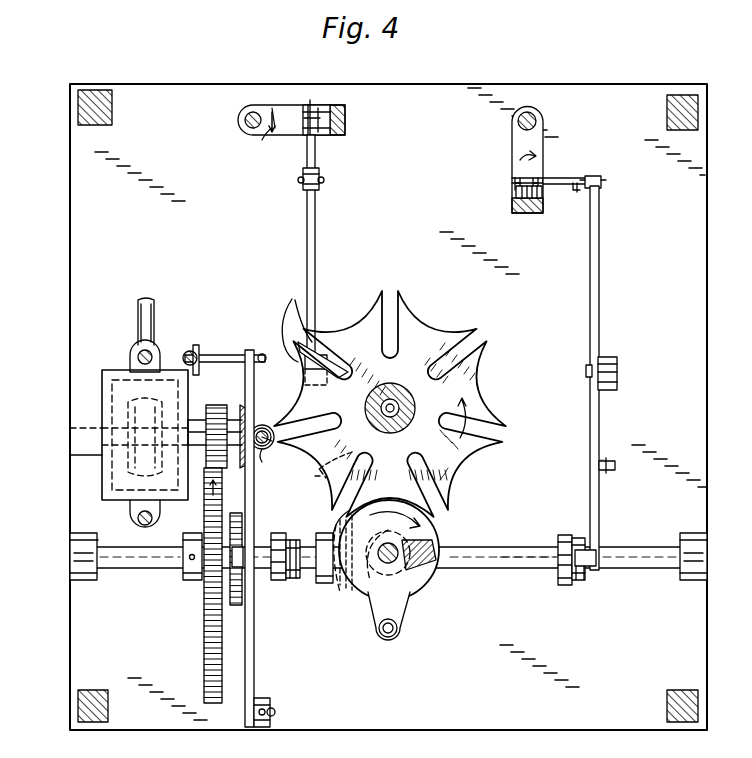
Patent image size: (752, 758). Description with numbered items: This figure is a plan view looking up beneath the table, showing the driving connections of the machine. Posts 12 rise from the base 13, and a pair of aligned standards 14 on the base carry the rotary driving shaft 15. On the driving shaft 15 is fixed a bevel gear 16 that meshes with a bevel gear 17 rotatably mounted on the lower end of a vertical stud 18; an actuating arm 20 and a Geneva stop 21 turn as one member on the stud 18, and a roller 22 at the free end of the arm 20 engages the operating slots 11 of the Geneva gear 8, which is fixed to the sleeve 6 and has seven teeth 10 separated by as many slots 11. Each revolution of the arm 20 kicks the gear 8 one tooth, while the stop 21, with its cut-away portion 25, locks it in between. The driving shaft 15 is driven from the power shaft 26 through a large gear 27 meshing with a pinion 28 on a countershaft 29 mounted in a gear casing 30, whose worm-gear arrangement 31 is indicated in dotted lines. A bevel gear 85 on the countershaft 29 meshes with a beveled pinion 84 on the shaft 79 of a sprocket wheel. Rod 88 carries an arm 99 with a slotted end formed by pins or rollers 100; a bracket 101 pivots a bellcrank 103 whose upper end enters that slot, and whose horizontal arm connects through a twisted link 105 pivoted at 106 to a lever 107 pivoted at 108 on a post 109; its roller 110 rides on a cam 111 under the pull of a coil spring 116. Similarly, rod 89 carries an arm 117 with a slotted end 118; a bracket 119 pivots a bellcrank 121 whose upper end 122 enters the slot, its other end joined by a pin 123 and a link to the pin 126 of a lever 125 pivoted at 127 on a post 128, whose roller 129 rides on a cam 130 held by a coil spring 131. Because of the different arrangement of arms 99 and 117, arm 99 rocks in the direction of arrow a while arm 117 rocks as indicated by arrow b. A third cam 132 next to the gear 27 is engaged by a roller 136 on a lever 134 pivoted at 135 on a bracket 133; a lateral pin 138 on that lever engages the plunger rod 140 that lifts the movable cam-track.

The sleeve 6 is at (396, 392).
The Geneva gear 8 is at (390, 404).
The teeth 10 is at (448, 460).
The operating slots 11 is at (482, 432).
The posts 12 is at (108, 122).
The base 13 is at (641, 443).
The standards 14 is at (70, 546).
The driving shaft 15 is at (528, 547).
The bevel gear 16 is at (337, 592).
The bevel gear 17 is at (440, 582).
The vertical stud 18 is at (398, 502).
The actuating arm 20 is at (398, 614).
The Geneva stop 21 is at (440, 538).
The roller 22 is at (388, 636).
The cam track 25 is at (415, 600).
The power shaft 26 is at (138, 312).
The large gear 27 is at (204, 645).
The pinion 28 is at (214, 403).
The countershaft 29 is at (198, 430).
The gear casing 30 is at (70, 455).
The worm-gear arrangement 31 is at (112, 388).
The shaft 79 is at (265, 426).
The beveled pinion 84 is at (264, 452).
The bevel gear 85 is at (247, 466).
The rod 88 is at (536, 120).
The rod 89 is at (245, 120).
The arm 99 is at (518, 148).
The pins or rollers 100 is at (516, 194).
The bracket 101 is at (530, 212).
The bellcrank 103 is at (560, 178).
The twisted link 105 is at (577, 194).
The pivot 106 is at (606, 184).
The lever 107 is at (599, 286).
The pivot 108 is at (586, 372).
The post or bracket 109 is at (618, 364).
The roller 110 is at (582, 540).
The cam 111 is at (580, 584).
The coil spring 116 is at (609, 470).
The arm 117 is at (275, 132).
The slotted end 118 is at (325, 130).
The bracket 119 is at (345, 110).
The bellcrank 121 is at (319, 176).
The upper end 122 is at (303, 118).
The pin 123 is at (324, 184).
The lever 125 is at (315, 265).
The pin 126 is at (298, 182).
The pivot 127 is at (291, 324).
The post 128 is at (327, 362).
The roller 129 is at (292, 580).
The cam 130 is at (278, 582).
The coil spring 131 is at (338, 452).
The third cam 132 is at (236, 598).
The post or bracket 133 is at (270, 700).
The lever 134 is at (252, 350).
The pivot 135 is at (272, 717).
The roller 136 is at (240, 548).
The lateral pin 138 is at (222, 354).
The plunger rod 140 is at (186, 352).
The arrow a is at (542, 168).
The arrow b is at (252, 130).